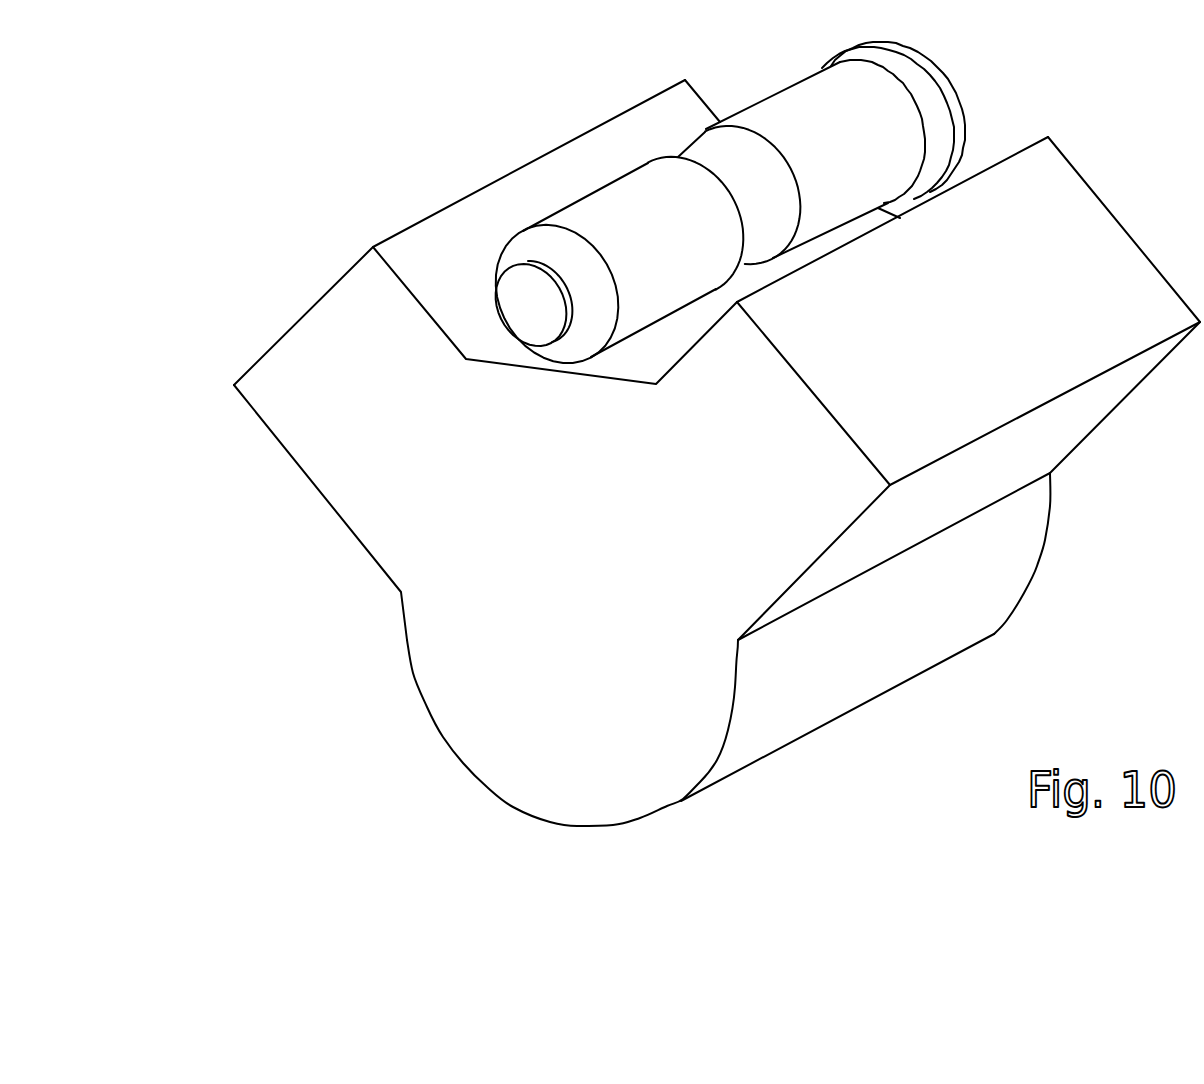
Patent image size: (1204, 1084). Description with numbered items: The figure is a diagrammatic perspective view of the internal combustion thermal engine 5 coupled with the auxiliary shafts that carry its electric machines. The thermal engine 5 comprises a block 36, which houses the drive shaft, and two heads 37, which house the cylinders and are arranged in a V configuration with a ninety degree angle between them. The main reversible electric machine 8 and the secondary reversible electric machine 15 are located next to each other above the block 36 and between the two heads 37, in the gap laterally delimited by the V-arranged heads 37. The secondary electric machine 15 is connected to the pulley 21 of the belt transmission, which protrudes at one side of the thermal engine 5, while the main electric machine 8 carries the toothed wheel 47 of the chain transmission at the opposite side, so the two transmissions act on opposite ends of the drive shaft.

The internal combustion thermal engine 5 is at (710, 432).
The main reversible electric machine 8 is at (583, 220).
The secondary reversible electric machine 15 is at (800, 120).
The pulley 21 is at (925, 92).
The block 36 is at (880, 765).
The heads 37 is at (438, 142).
The toothed wheel 47 is at (510, 312).